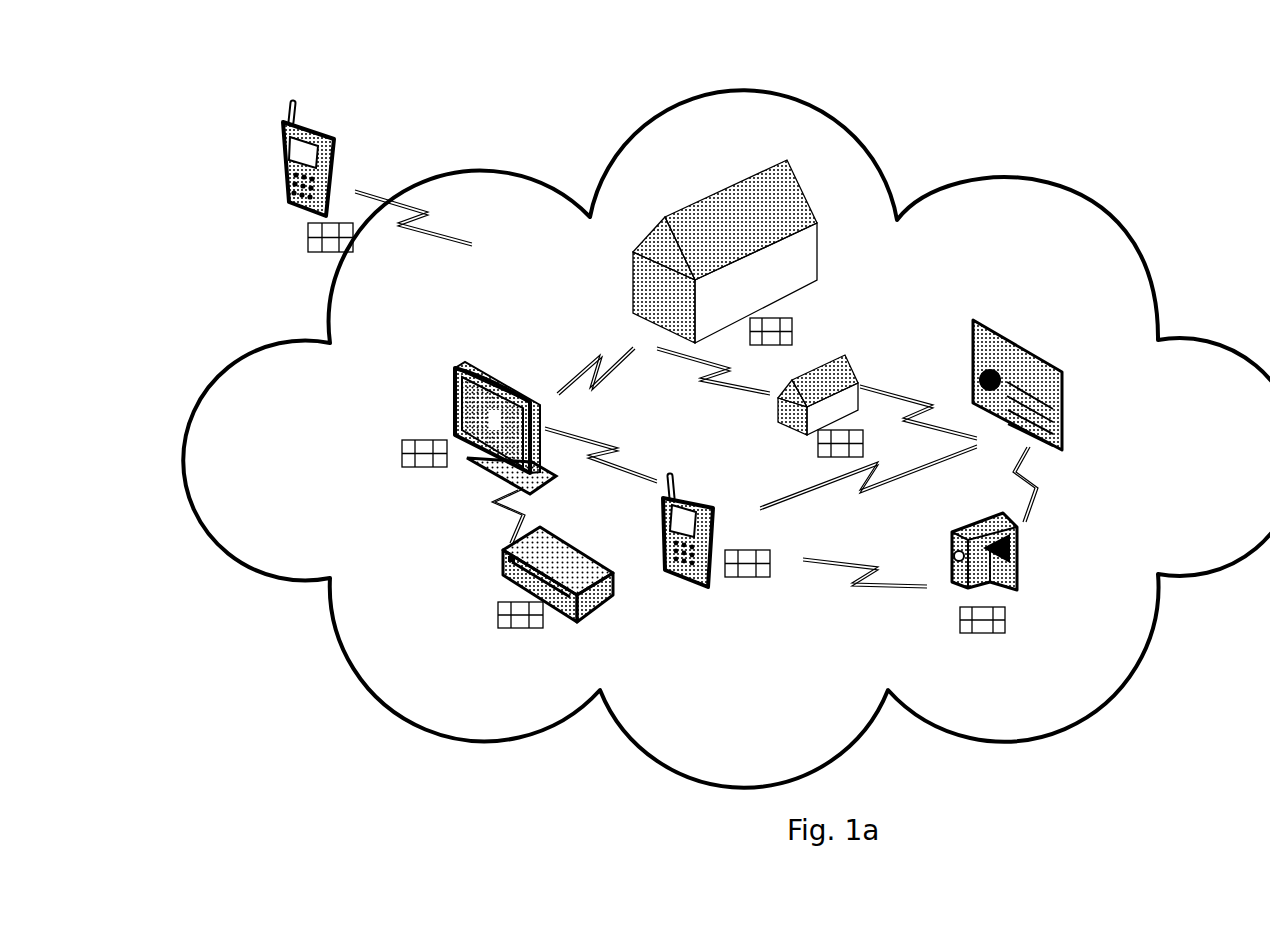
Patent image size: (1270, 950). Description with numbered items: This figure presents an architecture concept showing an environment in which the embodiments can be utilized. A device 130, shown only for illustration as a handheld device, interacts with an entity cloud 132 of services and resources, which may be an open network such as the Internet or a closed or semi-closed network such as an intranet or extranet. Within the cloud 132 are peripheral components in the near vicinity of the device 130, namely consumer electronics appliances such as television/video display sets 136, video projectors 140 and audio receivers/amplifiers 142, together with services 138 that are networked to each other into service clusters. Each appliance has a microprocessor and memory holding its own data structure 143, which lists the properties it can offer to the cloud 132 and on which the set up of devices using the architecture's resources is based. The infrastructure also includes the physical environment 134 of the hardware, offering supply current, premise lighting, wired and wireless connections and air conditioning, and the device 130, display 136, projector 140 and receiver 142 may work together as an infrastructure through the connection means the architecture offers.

The device 130 is at (343, 115).
The entity cloud 132 is at (1137, 312).
The physical environment 134 is at (797, 167).
The television/video display set 136 is at (528, 362).
The services 138 is at (1030, 332).
The video projector 140 is at (977, 507).
The audio receiver/amplifier 142 is at (507, 587).
The data structure 143 is at (333, 256).